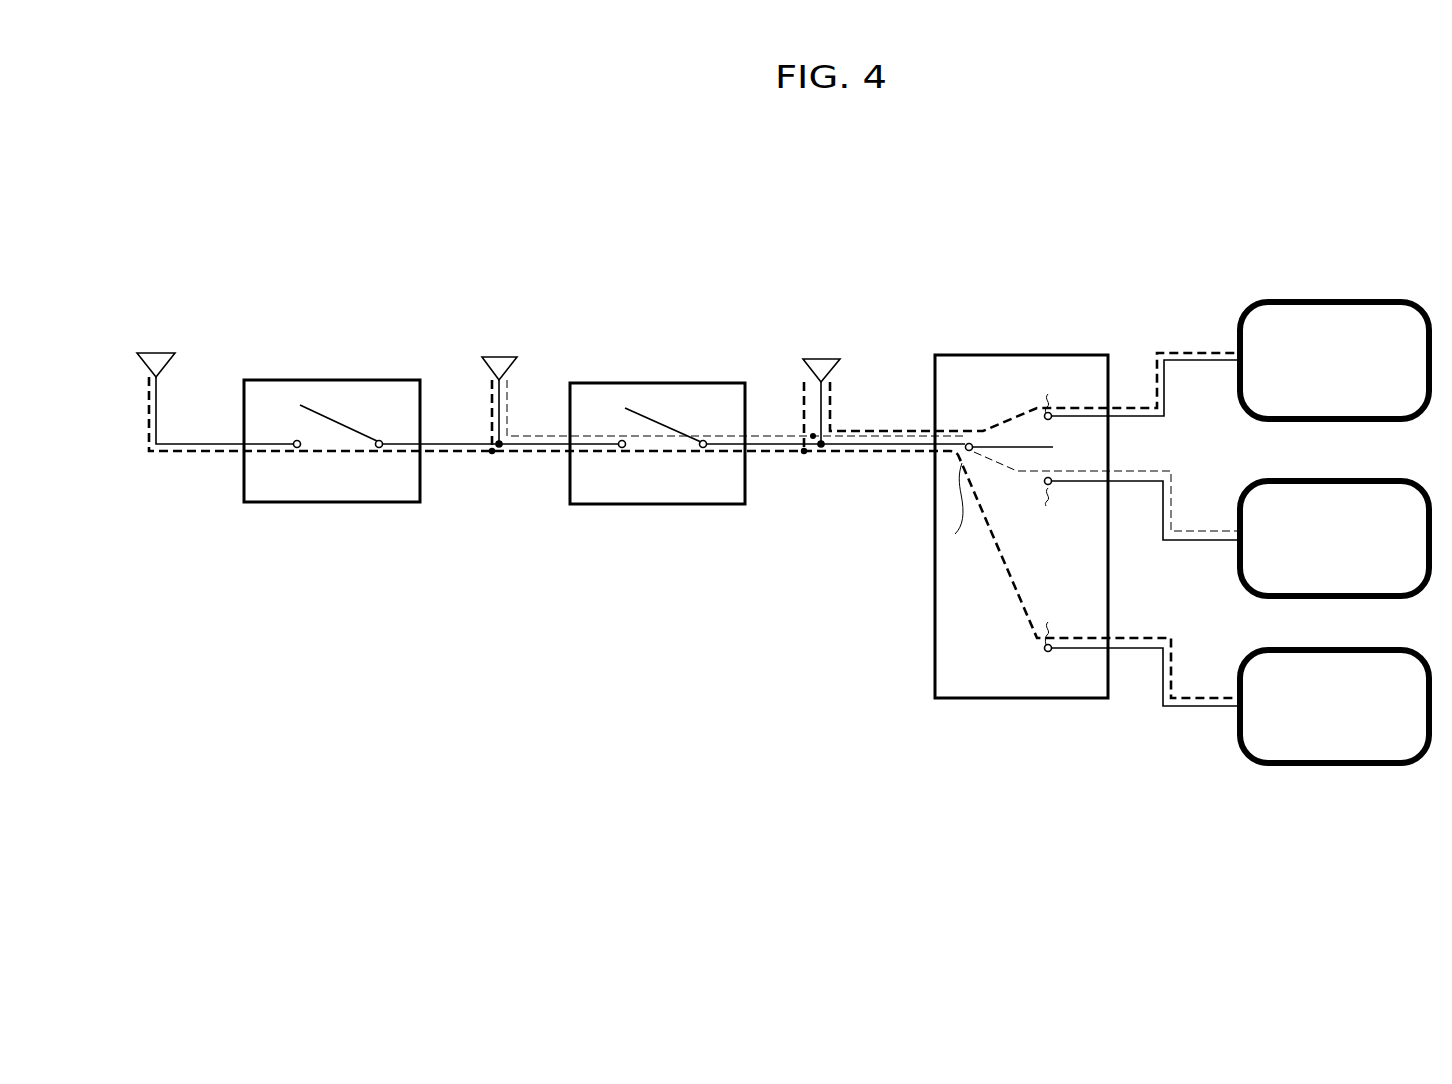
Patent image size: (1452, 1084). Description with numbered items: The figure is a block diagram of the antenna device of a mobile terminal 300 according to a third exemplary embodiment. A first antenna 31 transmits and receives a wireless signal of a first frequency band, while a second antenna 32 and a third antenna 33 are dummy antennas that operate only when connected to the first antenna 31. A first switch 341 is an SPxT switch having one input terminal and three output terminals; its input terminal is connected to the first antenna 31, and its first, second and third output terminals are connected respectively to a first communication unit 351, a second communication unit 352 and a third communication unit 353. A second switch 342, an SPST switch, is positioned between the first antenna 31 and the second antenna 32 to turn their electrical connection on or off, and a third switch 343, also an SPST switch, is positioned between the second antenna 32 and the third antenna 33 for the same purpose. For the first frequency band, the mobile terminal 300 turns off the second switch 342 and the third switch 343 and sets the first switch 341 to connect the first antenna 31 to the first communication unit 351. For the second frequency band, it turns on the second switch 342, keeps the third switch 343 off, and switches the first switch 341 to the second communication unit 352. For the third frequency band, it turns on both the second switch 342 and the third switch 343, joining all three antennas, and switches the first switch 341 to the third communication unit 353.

The mobile terminal 300 is at (1289, 228).
The first antenna 31 is at (818, 359).
The second antenna 32 is at (497, 357).
The third antenna 33 is at (152, 353).
The first switch 341 is at (1018, 355).
The second switch 342 is at (654, 383).
The third switch 343 is at (330, 380).
The first communication unit 351 is at (1333, 299).
The second communication unit 352 is at (1333, 479).
The third communication unit 353 is at (1332, 768).